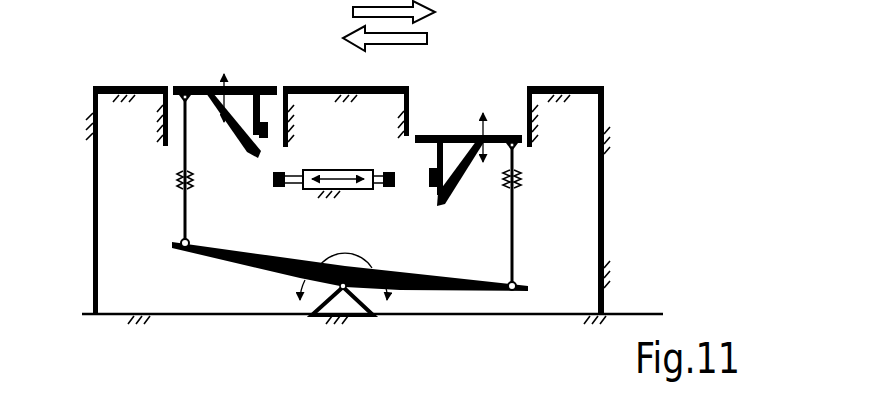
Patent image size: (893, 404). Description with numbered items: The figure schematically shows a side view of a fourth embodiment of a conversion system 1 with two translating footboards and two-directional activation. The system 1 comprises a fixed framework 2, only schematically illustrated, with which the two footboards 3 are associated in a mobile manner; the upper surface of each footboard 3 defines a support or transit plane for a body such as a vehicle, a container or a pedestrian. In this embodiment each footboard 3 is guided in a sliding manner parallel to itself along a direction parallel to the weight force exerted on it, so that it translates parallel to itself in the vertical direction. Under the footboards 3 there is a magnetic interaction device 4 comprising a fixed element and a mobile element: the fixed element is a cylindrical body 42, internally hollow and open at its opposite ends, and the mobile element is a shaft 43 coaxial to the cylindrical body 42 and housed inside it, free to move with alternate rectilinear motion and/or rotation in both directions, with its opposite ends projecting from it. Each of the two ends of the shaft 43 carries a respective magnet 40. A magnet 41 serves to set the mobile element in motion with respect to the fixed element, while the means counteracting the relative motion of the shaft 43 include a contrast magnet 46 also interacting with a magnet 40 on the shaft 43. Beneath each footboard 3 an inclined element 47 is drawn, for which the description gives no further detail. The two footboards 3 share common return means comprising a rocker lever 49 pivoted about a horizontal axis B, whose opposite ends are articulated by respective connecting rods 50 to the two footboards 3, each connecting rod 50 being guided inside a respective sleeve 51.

The system 1 is at (628, 74).
The fixed framework 2 is at (602, 200).
The footboard 3 is at (243, 88).
The magnetic interaction device 4 is at (327, 146).
The magnet 40 is at (273, 179).
The magnet 41 is at (269, 128).
The cylindrical body 42 is at (353, 190).
The shaft 43 is at (296, 187).
The contrast magnet 46 is at (430, 190).
The inclined guide 47 is at (243, 122).
The rocker lever 49 is at (245, 262).
The connecting rod 50 is at (183, 222).
The sleeve 51 is at (177, 183).
The horizontal axis B is at (344, 289).